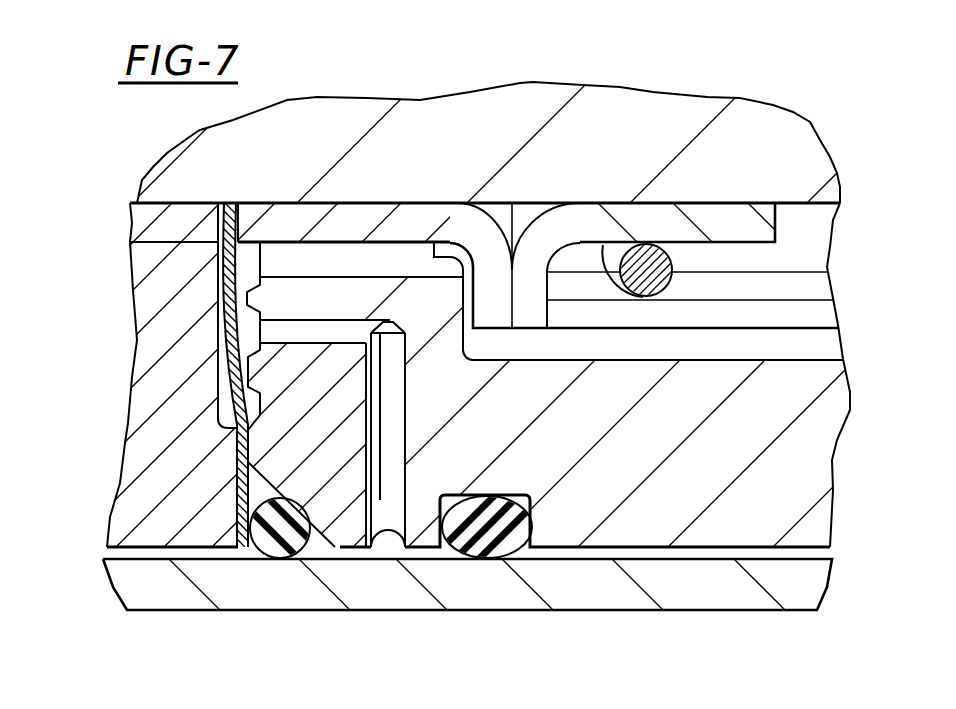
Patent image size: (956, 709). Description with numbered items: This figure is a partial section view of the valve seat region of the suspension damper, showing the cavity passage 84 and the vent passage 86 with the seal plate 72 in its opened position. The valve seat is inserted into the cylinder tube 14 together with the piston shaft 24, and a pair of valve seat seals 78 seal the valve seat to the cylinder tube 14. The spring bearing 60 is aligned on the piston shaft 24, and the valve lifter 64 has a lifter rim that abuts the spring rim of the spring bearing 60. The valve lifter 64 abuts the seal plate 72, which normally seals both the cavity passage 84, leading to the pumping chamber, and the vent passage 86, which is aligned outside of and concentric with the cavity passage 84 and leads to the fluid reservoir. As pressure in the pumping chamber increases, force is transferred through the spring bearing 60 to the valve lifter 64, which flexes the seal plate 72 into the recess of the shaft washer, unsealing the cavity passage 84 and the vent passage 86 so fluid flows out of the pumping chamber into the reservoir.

The piston shaft 24 is at (540, 93).
The valve lifter 64 is at (440, 203).
The spring bearing 60 is at (717, 203).
The cavity passage 84 is at (380, 262).
The seal plate 72 is at (228, 300).
The vent passage 86 is at (380, 508).
The valve seat seal 78 is at (316, 556).
The cylinder tube 14 is at (195, 610).